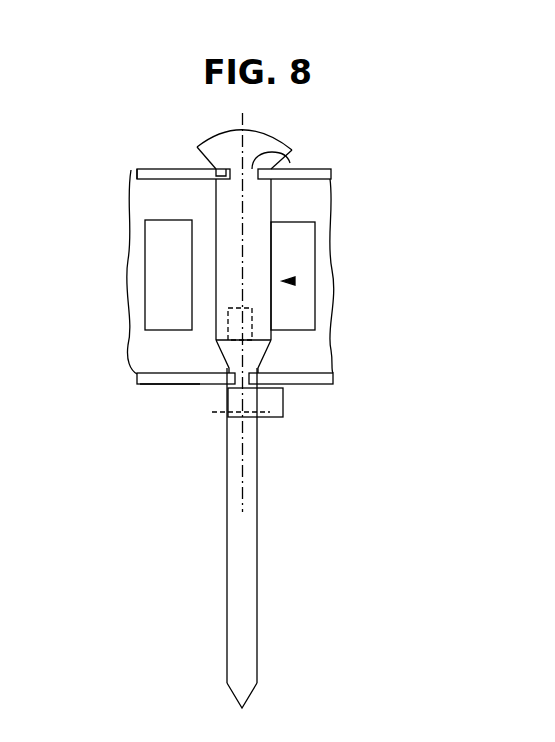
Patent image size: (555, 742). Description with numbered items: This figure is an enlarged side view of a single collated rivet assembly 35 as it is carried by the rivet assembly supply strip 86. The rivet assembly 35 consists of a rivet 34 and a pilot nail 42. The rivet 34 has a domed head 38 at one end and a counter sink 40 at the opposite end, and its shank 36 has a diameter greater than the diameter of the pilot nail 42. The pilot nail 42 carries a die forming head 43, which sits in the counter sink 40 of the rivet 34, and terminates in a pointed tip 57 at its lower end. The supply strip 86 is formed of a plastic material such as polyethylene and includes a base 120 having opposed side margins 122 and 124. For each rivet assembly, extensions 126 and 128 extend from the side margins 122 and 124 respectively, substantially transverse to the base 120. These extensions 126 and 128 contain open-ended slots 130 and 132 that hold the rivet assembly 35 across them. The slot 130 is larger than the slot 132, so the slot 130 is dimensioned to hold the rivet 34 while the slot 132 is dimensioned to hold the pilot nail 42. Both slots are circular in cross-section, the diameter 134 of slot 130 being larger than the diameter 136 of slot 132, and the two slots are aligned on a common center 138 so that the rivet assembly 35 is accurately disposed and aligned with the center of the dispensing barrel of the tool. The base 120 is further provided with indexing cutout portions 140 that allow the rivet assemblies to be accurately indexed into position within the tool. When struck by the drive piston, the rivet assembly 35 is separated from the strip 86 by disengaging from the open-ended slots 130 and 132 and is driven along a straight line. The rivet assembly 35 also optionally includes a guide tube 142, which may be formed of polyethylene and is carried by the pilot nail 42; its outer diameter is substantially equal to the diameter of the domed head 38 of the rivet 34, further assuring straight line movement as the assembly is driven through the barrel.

The rivet 34 is at (272, 204).
The collated rivet assembly 35 is at (290, 281).
The shank 36 is at (225, 203).
The domed head 38 is at (262, 143).
The counter sink 40 is at (235, 322).
The pilot nail 42 is at (258, 487).
The die forming head 43 is at (258, 350).
The pointed tip 57 is at (246, 702).
The rivet assembly supply strip 86 is at (331, 170).
The base 120 is at (326, 252).
The side margin 122 is at (137, 173).
The side margin 124 is at (135, 386).
The extension 126 is at (165, 168).
The extension 128 is at (157, 393).
The slot 130 is at (284, 153).
The slot 132 is at (293, 384).
The diameter 134 is at (224, 168).
The diameter 136 is at (235, 390).
The common center 138 is at (242, 287).
The indexing cutout portion 140 is at (157, 273).
The guide tube 142 is at (270, 407).